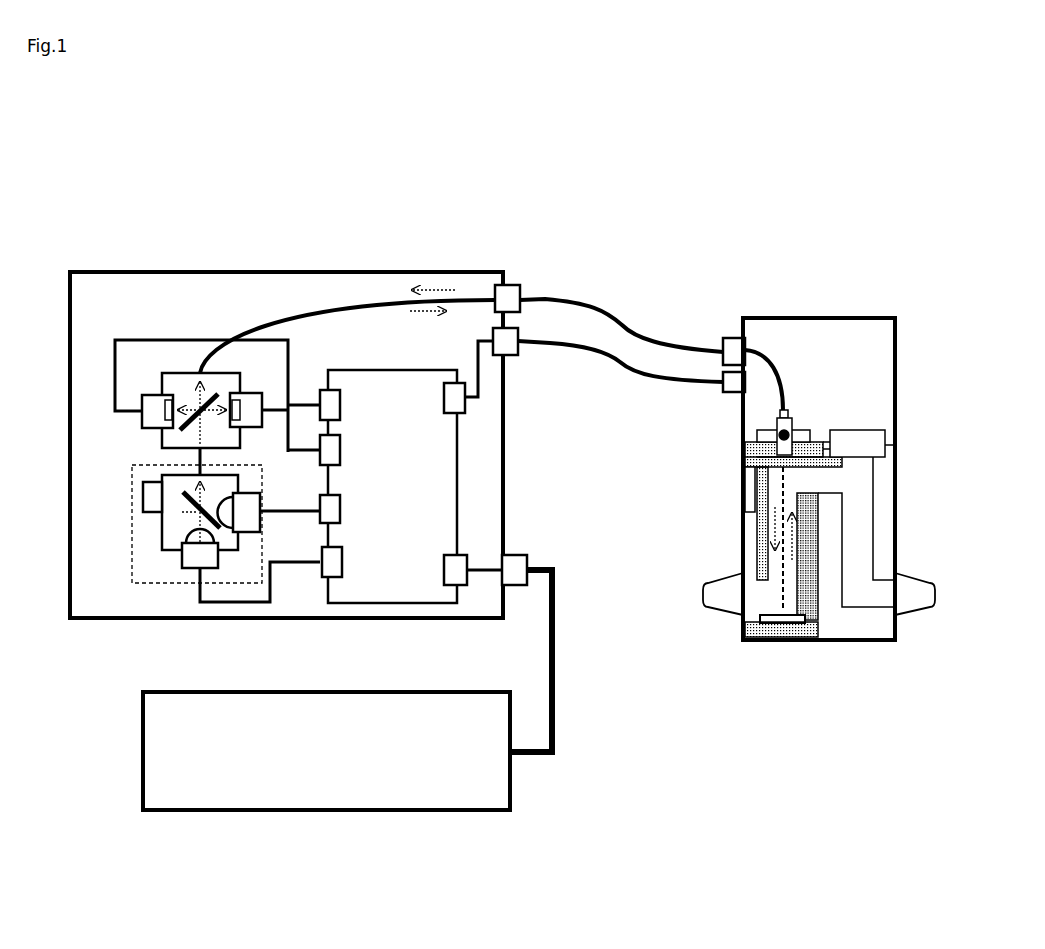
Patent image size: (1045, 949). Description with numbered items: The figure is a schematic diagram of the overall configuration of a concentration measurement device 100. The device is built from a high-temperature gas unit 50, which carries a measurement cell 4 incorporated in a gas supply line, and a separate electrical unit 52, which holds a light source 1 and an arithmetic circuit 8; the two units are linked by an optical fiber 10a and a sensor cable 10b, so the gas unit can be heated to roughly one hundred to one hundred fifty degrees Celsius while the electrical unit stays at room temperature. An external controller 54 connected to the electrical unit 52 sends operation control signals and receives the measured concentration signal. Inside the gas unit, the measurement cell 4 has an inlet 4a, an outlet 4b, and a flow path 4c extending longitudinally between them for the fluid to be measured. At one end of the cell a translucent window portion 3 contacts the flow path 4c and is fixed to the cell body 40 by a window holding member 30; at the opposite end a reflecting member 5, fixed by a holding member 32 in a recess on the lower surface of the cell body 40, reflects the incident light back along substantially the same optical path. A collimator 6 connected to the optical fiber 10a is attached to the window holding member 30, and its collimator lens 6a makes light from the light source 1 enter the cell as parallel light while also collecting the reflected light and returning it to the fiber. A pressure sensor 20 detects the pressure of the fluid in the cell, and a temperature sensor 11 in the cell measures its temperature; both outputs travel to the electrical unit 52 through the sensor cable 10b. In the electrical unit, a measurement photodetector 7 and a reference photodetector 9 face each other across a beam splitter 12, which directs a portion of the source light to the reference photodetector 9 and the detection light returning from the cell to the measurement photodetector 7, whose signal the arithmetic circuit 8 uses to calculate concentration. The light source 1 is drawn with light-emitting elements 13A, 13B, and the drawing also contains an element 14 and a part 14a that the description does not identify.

The concentration measurement device 100 is at (708, 222).
The electrical unit 52 is at (236, 268).
The external controller 54 is at (358, 812).
The arithmetic circuit 8 is at (418, 485).
The beam splitter 12 is at (164, 383).
The measurement photodetector 7 is at (140, 428).
The reference photodetector 9 is at (255, 428).
The light source 1 is at (160, 587).
The beam splitter 14 is at (176, 520).
The light emitting element 14a is at (143, 497).
The light-emitting element 13B is at (250, 514).
The light-emitting element 13A is at (195, 552).
The optical fiber 10a is at (352, 305).
The sensor cable 10b is at (558, 345).
The high-temperature gas unit 50 is at (830, 318).
The inlet 4a is at (745, 598).
The window holding member 30 is at (745, 447).
The window portion 3 is at (745, 460).
The collimator 6 is at (786, 413).
The collimator lens 6a is at (790, 428).
The pressure sensor 20 is at (860, 442).
The temperature sensor 11 is at (750, 495).
The cell body 40 is at (760, 540).
The flow path 4c is at (768, 565).
The outlet 4b is at (818, 478).
The measurement cell 4 is at (808, 568).
The reflecting member 5 is at (786, 640).
The holding member 32 is at (750, 640).